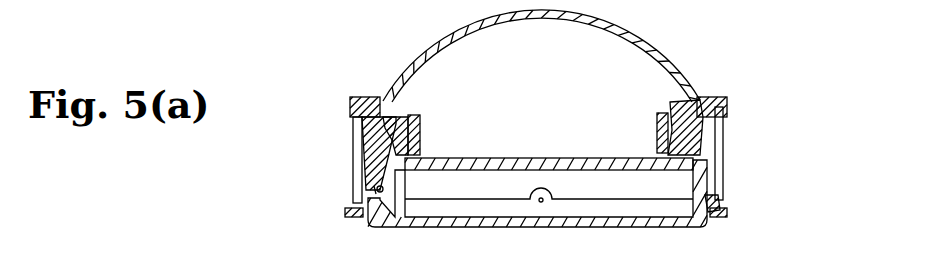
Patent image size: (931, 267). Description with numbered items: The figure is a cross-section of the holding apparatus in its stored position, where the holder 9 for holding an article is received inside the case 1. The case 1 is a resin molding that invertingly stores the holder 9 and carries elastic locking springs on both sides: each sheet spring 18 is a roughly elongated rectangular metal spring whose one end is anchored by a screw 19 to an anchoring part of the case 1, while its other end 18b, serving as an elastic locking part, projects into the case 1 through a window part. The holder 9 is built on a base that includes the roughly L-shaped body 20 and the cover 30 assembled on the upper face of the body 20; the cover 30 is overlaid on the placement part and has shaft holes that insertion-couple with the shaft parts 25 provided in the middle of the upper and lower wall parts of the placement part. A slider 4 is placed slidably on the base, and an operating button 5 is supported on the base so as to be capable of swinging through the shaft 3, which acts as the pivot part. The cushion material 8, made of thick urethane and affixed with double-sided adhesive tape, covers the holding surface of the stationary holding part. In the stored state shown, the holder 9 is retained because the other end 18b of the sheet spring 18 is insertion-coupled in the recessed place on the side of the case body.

The case 1 is at (659, 37).
The shaft 3 is at (366, 184).
The slider 4 is at (680, 113).
The operating button 5 is at (352, 138).
The cushion material 8 is at (420, 126).
The holder 9 is at (435, 234).
The sheet spring 18 is at (353, 158).
The other end of sheet spring 18b is at (718, 197).
The screw 19 is at (350, 106).
The body 20 is at (453, 154).
The shaft part 25 is at (543, 201).
The cover 30 is at (377, 225).